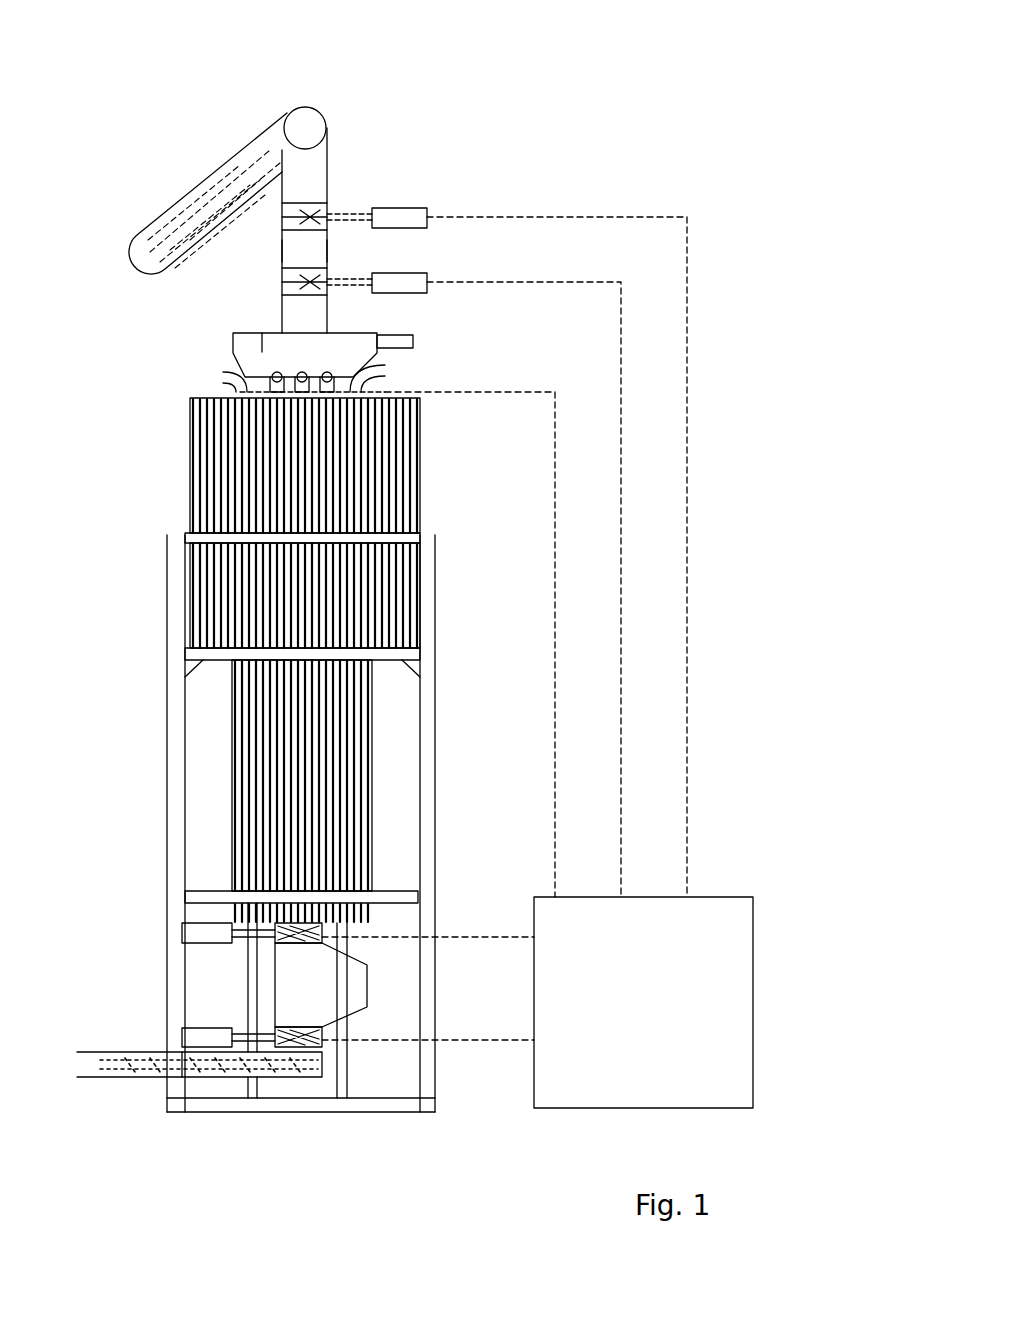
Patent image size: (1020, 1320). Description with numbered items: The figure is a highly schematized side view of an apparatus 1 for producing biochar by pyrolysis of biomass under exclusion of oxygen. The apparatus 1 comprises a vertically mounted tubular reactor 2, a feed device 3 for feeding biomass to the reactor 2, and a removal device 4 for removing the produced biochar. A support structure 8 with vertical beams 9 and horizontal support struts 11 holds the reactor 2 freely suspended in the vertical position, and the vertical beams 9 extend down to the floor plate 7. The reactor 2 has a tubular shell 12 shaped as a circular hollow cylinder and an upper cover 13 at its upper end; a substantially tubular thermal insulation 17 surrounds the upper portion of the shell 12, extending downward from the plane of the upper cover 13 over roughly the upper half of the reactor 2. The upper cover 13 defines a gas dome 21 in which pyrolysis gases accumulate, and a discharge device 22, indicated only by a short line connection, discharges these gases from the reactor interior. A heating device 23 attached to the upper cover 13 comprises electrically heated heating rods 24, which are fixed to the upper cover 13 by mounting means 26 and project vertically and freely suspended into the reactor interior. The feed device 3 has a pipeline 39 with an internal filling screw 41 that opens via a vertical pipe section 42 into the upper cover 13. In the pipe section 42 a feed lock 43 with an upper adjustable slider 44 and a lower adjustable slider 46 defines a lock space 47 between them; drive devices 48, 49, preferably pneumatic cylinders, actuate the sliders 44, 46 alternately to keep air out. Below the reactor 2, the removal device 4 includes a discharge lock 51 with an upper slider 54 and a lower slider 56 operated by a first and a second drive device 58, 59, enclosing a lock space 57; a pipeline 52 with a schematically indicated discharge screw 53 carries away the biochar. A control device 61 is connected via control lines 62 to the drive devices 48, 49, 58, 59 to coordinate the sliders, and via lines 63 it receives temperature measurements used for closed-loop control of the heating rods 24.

The apparatus 1 is at (125, 108).
The reactor 2 is at (170, 425).
The feed device 3 is at (272, 108).
The removal device 4 is at (100, 1090).
The floor plate 7 is at (385, 1107).
The support structure 8 is at (150, 575).
The vertical beams 9 is at (175, 760).
The horizontal support struts 11 is at (228, 540).
The tubular shell 12 is at (232, 705).
The upper cover 13 is at (230, 343).
The thermal insulation 17 is at (190, 467).
The gas dome 21 is at (262, 330).
The discharge device 22 is at (415, 342).
The heating device 23 is at (218, 382).
The heating rods 24 is at (278, 365).
The mounting means 26 is at (370, 385).
The pipeline 39 is at (215, 180).
The filling screw 41 is at (188, 233).
The vertical pipe section 42 is at (317, 167).
The feed lock 43 is at (378, 162).
The upper adjustable slider 44 is at (310, 220).
The lower adjustable slider 46 is at (310, 285).
The lock space 47 is at (297, 248).
The drive device 48 is at (428, 210).
The drive device 49 is at (428, 277).
The discharge lock 51 is at (215, 988).
The pipeline 52 is at (210, 1085).
The discharge screw 53 is at (142, 1080).
The upper slider 54 is at (288, 932).
The lower slider 56 is at (290, 1040).
The lock space 57 is at (265, 985).
The first drive device 58 is at (195, 935).
The second drive device 59 is at (195, 1037).
The control device 61 is at (755, 1000).
The control lines 62 is at (623, 391).
The lines 63 is at (555, 675).